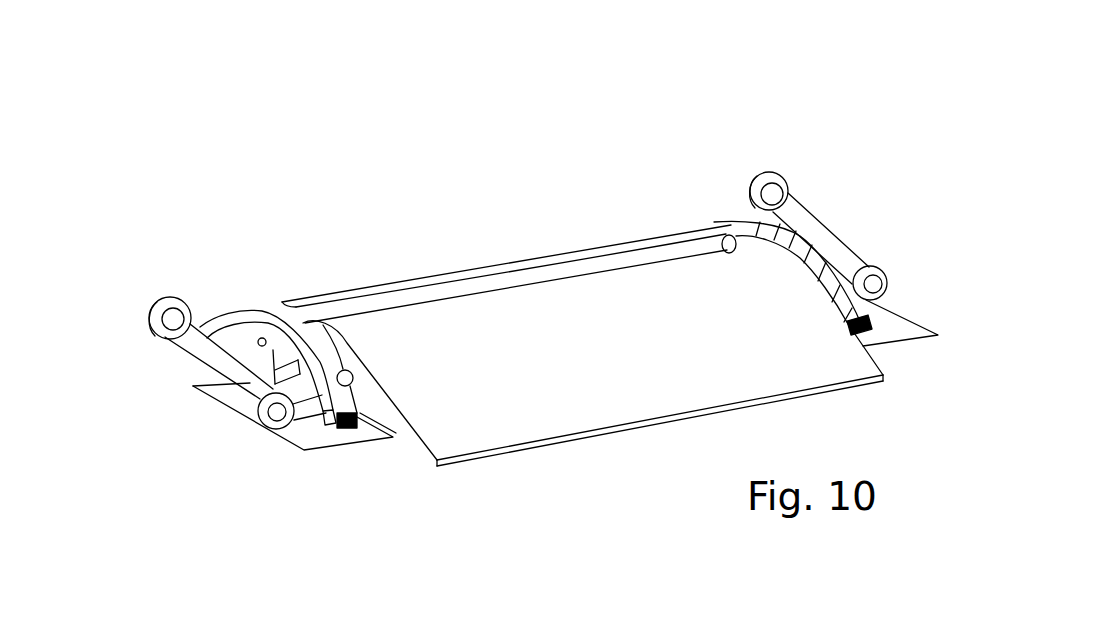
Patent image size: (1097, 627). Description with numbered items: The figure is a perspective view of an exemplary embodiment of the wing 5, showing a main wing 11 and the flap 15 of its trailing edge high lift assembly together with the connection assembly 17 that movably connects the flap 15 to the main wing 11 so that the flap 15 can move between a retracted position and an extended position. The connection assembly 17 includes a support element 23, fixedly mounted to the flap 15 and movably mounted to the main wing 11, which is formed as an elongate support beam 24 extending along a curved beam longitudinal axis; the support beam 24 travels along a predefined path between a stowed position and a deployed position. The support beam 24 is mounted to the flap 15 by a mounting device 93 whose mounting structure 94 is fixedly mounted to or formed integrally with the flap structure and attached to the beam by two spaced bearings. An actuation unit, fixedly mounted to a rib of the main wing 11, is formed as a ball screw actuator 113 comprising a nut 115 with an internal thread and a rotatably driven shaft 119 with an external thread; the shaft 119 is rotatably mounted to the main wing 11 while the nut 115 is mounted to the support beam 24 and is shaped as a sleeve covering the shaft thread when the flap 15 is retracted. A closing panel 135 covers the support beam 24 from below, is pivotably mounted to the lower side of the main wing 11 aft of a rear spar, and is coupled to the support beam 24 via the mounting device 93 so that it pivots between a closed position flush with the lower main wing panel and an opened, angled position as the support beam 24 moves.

The wing 5 is at (317, 192).
The main wing 11 is at (368, 249).
The flap 15 is at (637, 400).
The connection assembly 17 is at (97, 305).
The support element 23 is at (541, 314).
The support beam 24 is at (262, 312).
The mounting device 93 is at (507, 303).
The mounting structure 94 is at (273, 373).
The ball screw actuator 113 is at (200, 347).
The nut 115 is at (248, 384).
The shaft 119 is at (157, 298).
The closing panel 135 is at (317, 433).